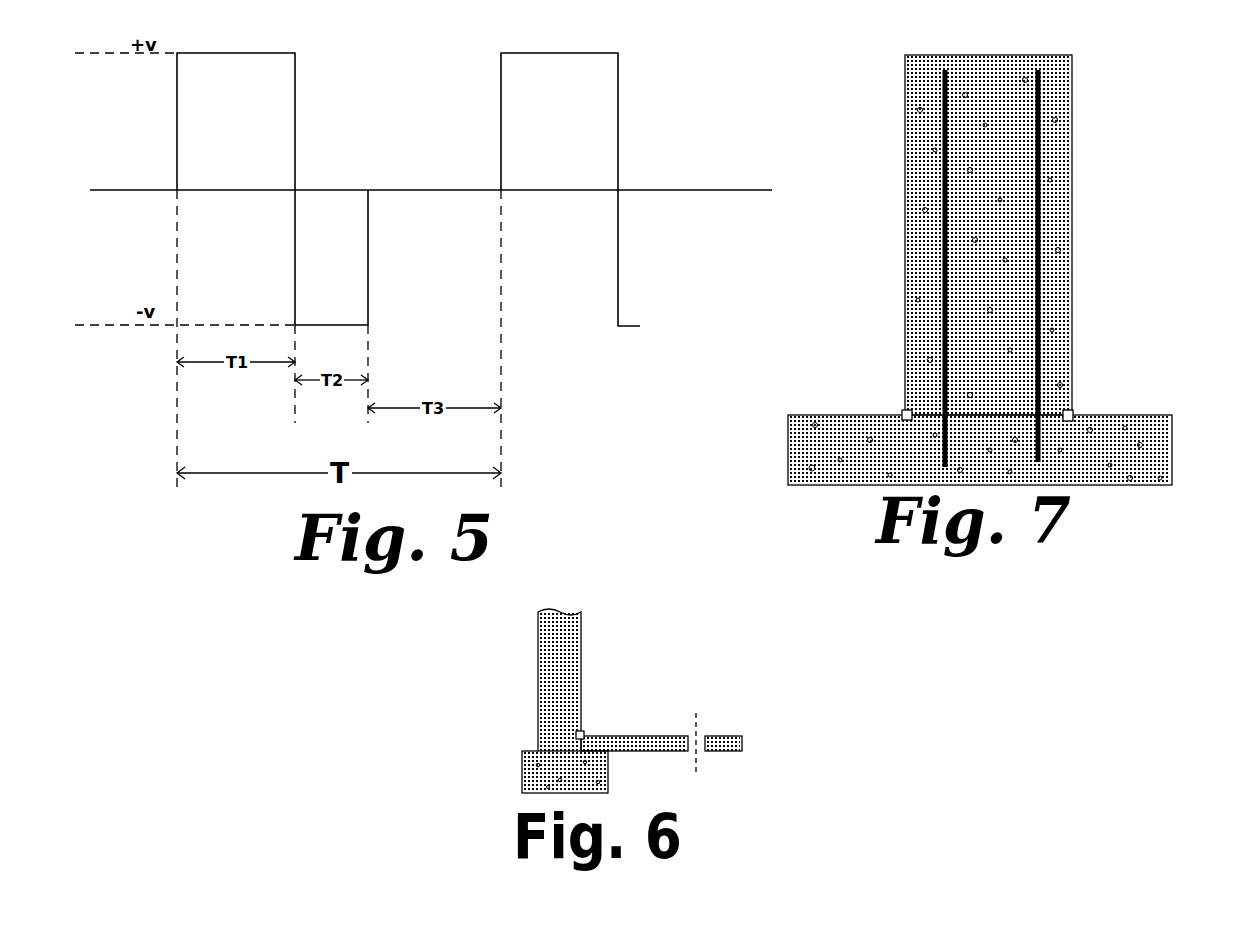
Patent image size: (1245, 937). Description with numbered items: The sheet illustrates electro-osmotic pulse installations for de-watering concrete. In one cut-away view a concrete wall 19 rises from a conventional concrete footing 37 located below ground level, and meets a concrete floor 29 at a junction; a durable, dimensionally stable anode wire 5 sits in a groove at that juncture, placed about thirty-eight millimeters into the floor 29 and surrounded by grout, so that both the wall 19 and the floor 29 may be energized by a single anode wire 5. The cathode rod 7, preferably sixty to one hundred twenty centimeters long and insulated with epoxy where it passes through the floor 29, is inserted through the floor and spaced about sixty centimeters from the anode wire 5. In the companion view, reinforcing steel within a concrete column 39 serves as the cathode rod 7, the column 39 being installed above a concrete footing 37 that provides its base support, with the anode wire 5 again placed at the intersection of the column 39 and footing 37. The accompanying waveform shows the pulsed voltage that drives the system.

In FIG. 7, the durable, dimensionally stable anode wire 5 is at (913, 412).
In FIG. 6, the durable, dimensionally stable anode wire 5 is at (584, 732).
In FIG. 7, the cathode rod 7 is at (1038, 71).
In FIG. 6, the cathode rod 7 is at (697, 773).
In FIG. 6, the concrete wall 19 is at (582, 642).
In FIG. 6, the concrete floor 29 is at (739, 737).
In FIG. 7, the concrete footing 37 is at (1162, 437).
In FIG. 6, the concrete footing 37 is at (522, 773).
In FIG. 7, the concrete column 39 is at (1067, 115).